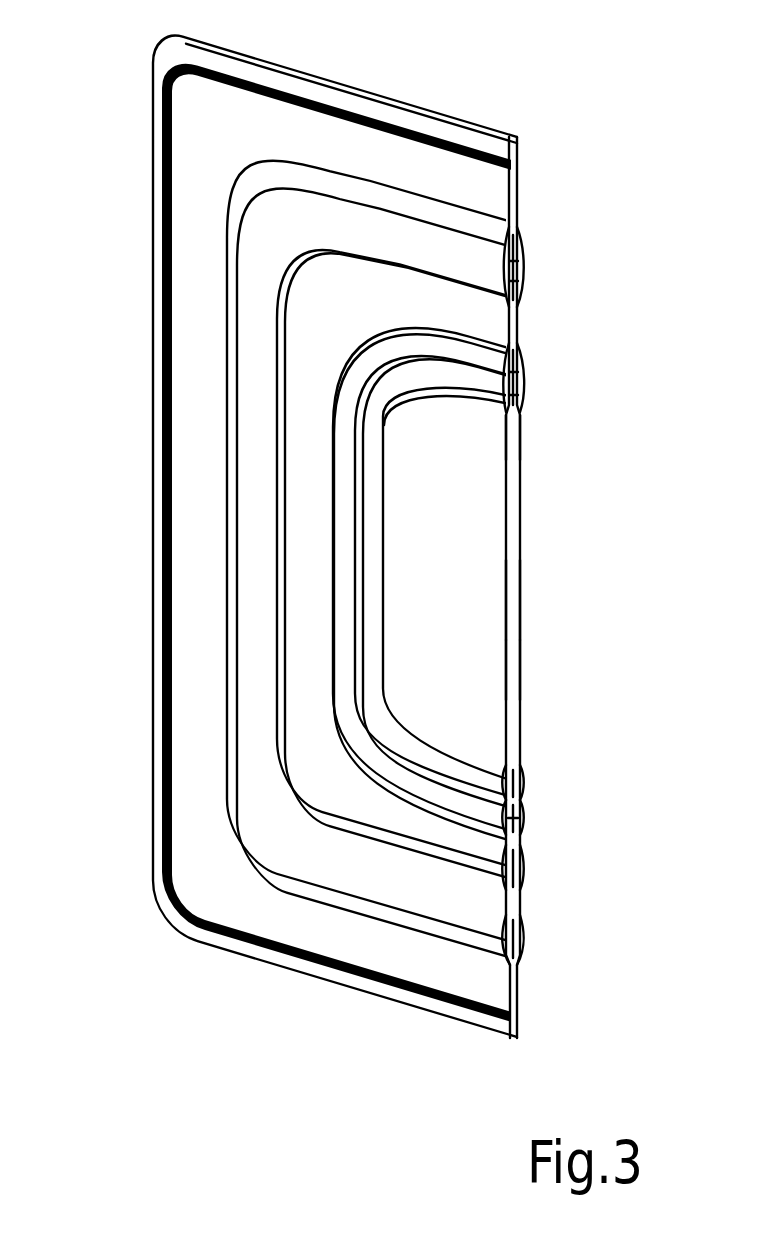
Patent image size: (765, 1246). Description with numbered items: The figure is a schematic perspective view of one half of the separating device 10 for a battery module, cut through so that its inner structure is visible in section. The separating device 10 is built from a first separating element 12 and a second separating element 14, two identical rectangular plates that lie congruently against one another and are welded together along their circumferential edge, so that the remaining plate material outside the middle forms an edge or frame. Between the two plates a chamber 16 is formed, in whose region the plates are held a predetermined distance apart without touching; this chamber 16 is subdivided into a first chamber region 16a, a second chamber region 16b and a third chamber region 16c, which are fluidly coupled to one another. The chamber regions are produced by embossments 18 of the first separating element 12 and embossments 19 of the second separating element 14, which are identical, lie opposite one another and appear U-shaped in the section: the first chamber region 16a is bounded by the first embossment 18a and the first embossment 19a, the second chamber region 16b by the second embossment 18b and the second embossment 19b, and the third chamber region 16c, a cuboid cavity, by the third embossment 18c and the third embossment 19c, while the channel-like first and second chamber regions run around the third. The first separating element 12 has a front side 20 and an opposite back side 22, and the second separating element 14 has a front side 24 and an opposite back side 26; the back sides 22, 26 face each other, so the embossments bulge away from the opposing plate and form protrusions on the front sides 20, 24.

The separating device 10 is at (123, 358).
The first separating element 12 is at (487, 201).
The second separating element 14 is at (512, 481).
The chamber 16 is at (537, 594).
The first chamber region 16a is at (540, 910).
The second chamber region 16b is at (540, 810).
The third chamber region 16c is at (540, 699).
The embossments of the first separating element 18 is at (464, 976).
The first embossment of the first separating element 18a is at (518, 947).
The second embossment of the first separating element 18b is at (520, 827).
The third embossment of the first separating element 18c is at (490, 733).
The embossments of the second separating element 19 is at (542, 373).
The first embossment of the second separating element 19a is at (520, 890).
The second embossment of the second separating element 19b is at (490, 812).
The third embossment of the second separating element 19c is at (514, 661).
The front side 20 is at (406, 165).
The back side 22 is at (524, 263).
The front side 24 is at (540, 430).
The back side 26 is at (513, 280).